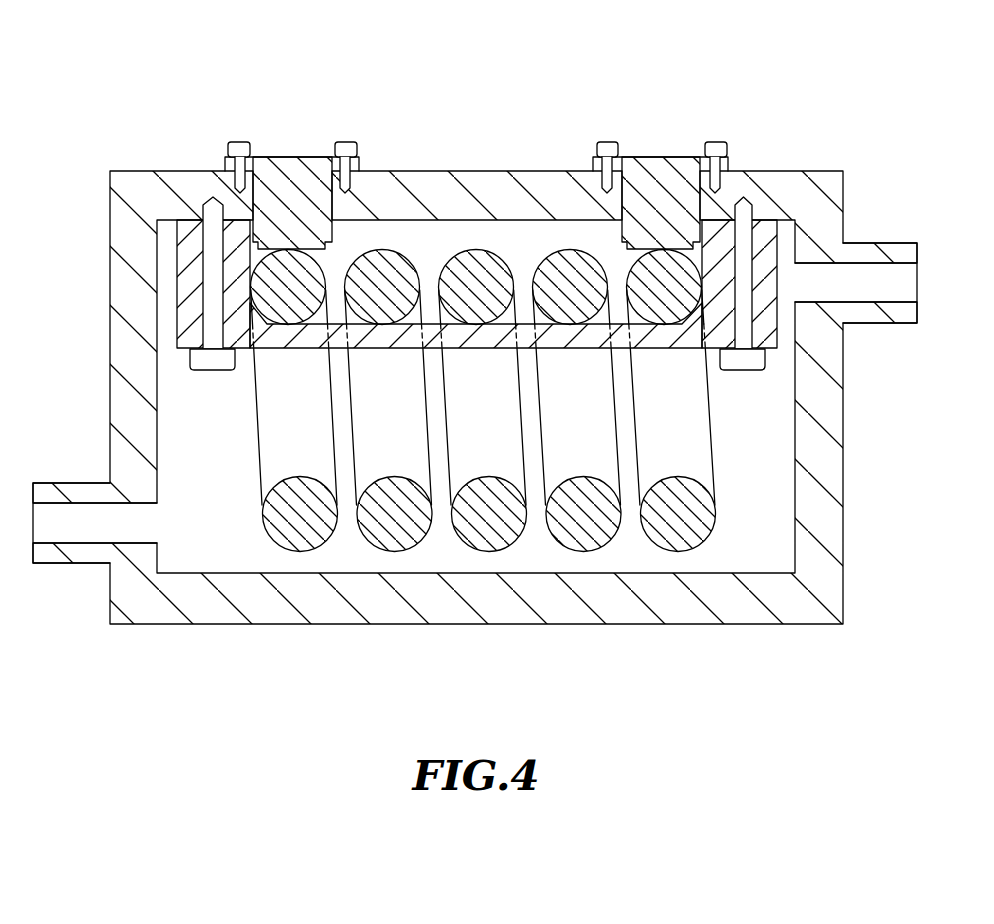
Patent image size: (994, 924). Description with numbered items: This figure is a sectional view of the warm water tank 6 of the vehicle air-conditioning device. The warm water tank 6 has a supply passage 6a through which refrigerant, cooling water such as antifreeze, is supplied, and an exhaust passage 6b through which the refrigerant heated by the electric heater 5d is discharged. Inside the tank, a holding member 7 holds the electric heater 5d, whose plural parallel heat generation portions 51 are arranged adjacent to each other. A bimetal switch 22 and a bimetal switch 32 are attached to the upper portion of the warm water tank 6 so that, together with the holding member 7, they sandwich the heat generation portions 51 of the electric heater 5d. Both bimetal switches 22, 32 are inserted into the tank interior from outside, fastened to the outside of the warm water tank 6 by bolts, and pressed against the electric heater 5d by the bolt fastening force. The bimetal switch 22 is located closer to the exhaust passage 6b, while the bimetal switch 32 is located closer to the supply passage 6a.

The warm water tank 6 is at (823, 118).
The supply passage 6a is at (78, 537).
The exhaust passage 6b is at (879, 270).
The holding member 7 is at (188, 318).
The bimetal switch 22 is at (661, 157).
The bimetal switch 32 is at (288, 157).
The heat generation portions 51 is at (388, 266).
The electric heater 5d is at (678, 553).